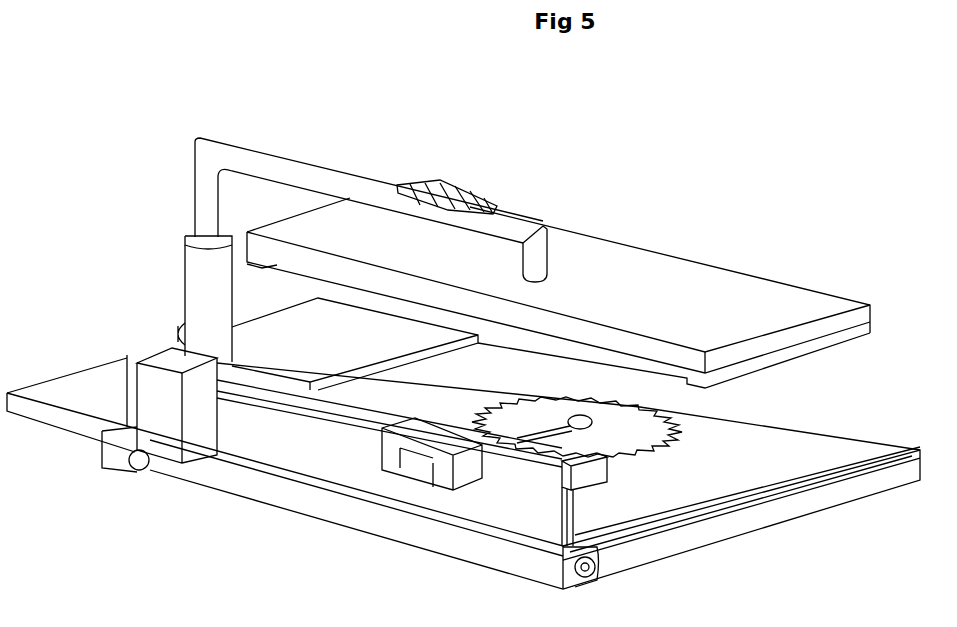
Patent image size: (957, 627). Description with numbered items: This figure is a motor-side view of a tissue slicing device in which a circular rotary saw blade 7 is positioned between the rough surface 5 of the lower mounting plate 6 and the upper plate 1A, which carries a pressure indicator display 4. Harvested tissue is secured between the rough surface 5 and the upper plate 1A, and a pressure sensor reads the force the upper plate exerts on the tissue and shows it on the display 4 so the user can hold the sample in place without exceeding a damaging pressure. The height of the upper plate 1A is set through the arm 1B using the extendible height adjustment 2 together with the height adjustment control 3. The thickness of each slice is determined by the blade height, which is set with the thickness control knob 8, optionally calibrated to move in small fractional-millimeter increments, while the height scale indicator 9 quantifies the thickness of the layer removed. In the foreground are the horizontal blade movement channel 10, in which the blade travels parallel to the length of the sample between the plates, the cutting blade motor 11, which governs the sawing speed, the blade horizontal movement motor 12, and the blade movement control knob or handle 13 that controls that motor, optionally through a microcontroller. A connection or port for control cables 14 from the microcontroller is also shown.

The upper plate 1A is at (597, 243).
The arm 1B is at (263, 147).
The extendible height adjustment 2 is at (188, 253).
The height adjustment control 3 is at (172, 335).
The pressure indicator display 4 is at (440, 185).
The rough surface 5 is at (820, 432).
The lower mounting plate 6 is at (763, 522).
The circular rotary saw blade 7 is at (680, 423).
The thickness control knob 8 is at (585, 568).
The height scale indicator 9 is at (563, 512).
The horizontal blade movement channel 10 is at (373, 430).
The cutting blade motor 11 is at (425, 472).
The blade horizontal movement motor 12 is at (147, 425).
The blade movement control knob or handle 13 is at (133, 465).
The connection or port for control cables 14 is at (457, 545).